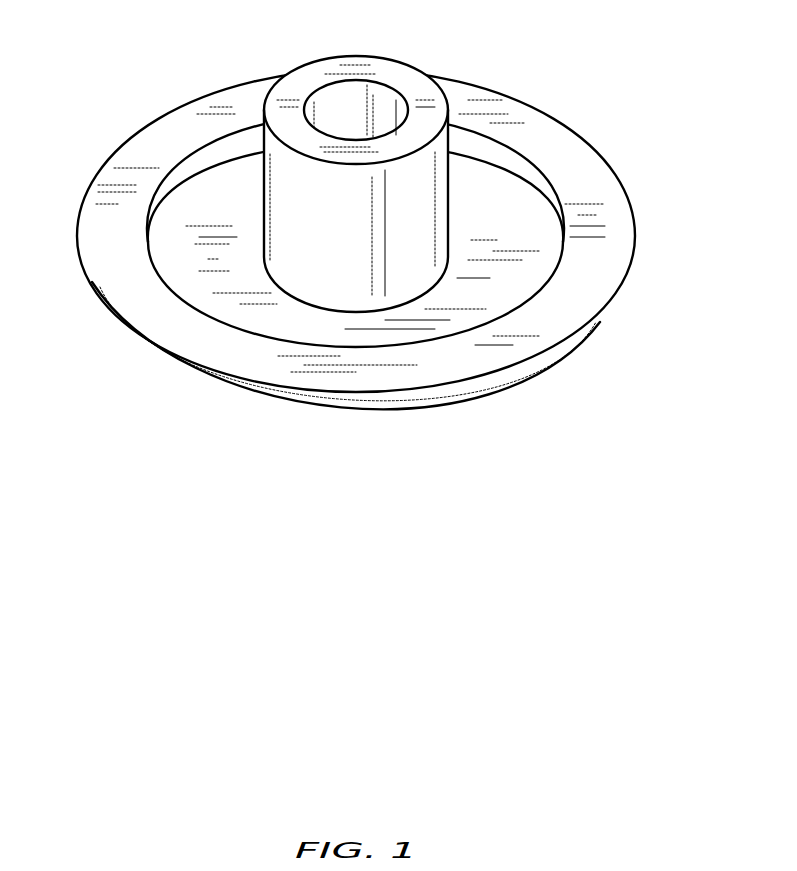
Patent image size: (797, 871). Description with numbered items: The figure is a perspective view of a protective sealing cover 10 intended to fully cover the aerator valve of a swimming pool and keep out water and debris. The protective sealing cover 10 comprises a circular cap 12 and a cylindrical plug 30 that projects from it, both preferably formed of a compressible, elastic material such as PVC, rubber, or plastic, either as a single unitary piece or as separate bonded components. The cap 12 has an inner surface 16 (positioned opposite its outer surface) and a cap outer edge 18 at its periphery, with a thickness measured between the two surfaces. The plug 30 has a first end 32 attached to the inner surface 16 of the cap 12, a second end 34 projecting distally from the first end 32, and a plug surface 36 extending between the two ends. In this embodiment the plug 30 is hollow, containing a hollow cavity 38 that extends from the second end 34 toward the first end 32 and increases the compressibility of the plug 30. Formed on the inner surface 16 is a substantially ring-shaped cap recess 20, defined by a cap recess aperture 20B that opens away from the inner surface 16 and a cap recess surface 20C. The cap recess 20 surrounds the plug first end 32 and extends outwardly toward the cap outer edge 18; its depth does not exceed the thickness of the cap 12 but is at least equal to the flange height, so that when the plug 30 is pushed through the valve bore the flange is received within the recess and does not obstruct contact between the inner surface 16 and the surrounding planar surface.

The protective sealing cover 10 is at (387, 260).
The cap 12 is at (407, 259).
The inner surface 16 is at (594, 294).
The cap outer edge 18 is at (260, 380).
The cap recess 20 is at (421, 219).
The cap recess aperture 20B is at (547, 180).
The cap recess surface 20C is at (516, 226).
The plug 30 is at (458, 183).
The first end 32 is at (282, 285).
The second end 34 is at (305, 82).
The plug surface 36 is at (278, 160).
The hollow cavity 38 is at (385, 107).